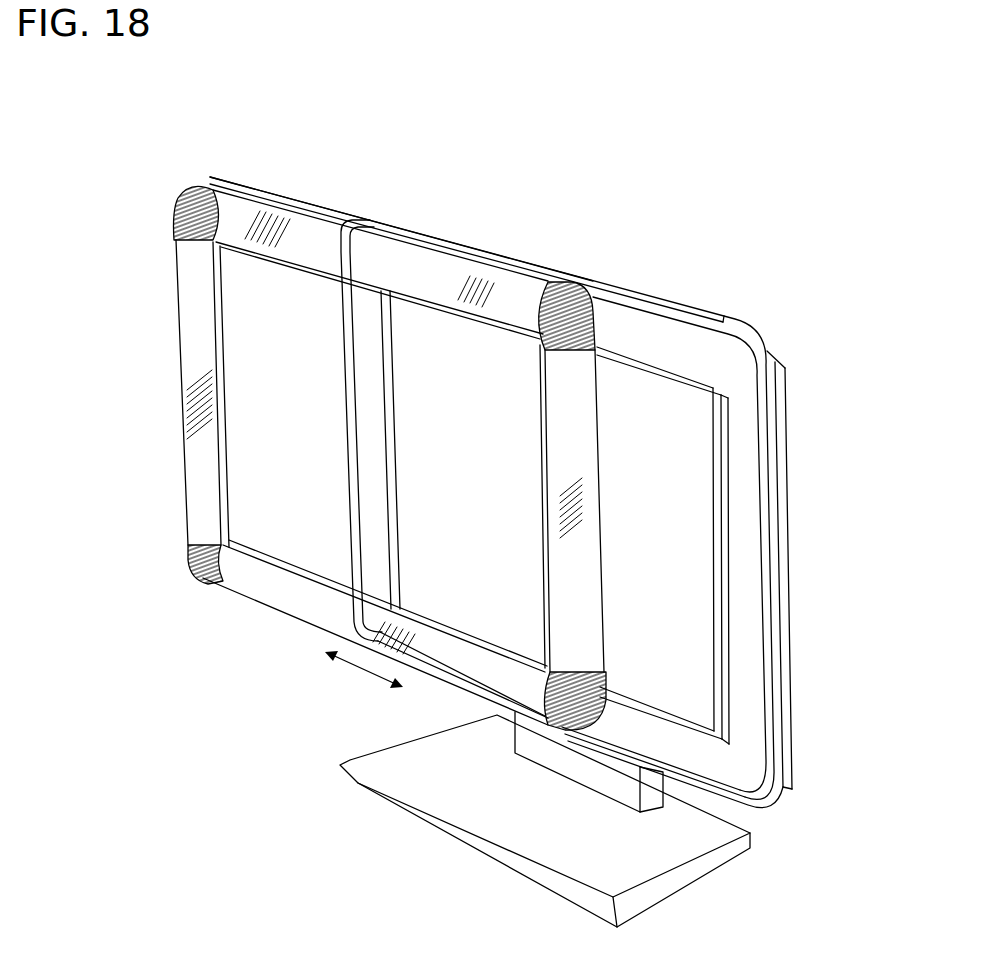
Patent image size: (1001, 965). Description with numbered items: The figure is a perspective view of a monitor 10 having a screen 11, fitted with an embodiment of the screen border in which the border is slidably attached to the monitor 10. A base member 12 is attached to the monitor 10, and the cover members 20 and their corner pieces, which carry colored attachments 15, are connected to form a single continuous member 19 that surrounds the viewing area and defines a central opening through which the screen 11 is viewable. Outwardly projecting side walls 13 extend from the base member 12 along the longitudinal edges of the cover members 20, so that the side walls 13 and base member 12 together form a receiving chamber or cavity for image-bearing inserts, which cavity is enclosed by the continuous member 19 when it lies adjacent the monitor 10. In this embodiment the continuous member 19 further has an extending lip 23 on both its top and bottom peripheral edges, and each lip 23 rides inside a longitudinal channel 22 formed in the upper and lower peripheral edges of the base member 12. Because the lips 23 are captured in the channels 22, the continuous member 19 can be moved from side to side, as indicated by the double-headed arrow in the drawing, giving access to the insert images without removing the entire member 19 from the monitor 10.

The monitor 10 is at (785, 445).
The screen 11 is at (670, 628).
The base member 12 is at (742, 520).
The side walls 13 is at (345, 413).
The colored attachments 15 is at (174, 209).
The continuous member 19 is at (394, 426).
The cover members 20 is at (300, 230).
The longitudinal channel 22 is at (609, 288).
The extending lip 23 is at (230, 182).